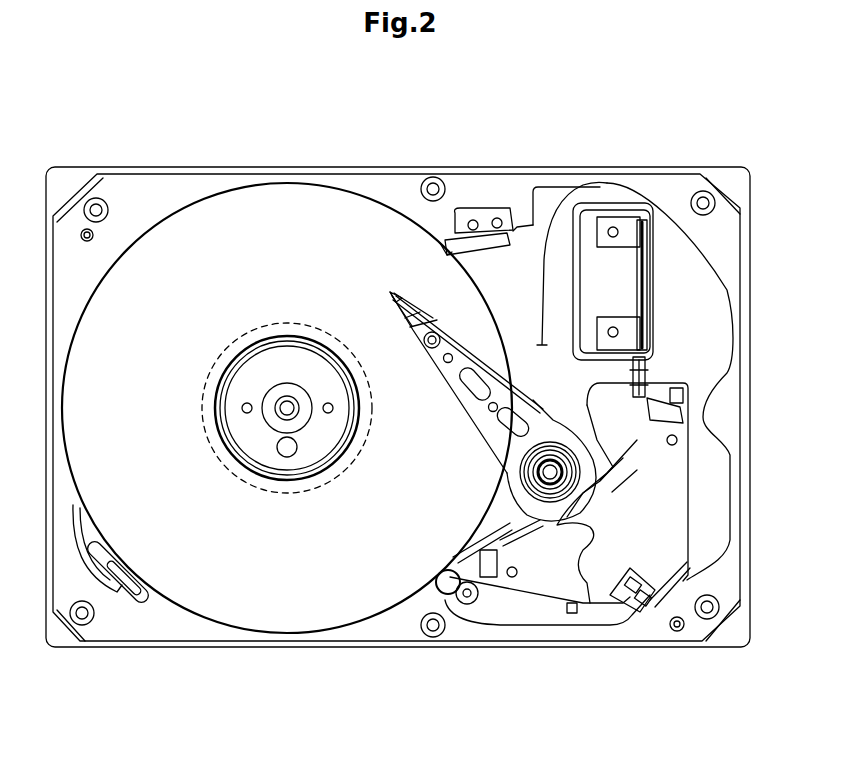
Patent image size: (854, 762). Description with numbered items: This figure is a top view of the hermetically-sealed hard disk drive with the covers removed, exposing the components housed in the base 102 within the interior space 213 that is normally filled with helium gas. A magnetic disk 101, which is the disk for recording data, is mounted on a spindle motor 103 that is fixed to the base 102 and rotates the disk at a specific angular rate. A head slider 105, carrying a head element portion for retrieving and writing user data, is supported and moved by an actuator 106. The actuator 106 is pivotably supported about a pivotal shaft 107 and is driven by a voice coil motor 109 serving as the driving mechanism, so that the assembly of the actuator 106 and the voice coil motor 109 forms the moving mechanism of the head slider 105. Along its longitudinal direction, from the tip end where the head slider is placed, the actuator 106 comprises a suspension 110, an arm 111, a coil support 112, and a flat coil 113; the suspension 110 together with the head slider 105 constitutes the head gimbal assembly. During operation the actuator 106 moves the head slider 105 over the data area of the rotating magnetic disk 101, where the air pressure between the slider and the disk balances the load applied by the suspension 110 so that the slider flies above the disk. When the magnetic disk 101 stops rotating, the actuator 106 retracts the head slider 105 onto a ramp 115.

The magnetic disk 101 is at (493, 307).
The base 102 is at (330, 648).
The spindle motor 103 is at (273, 490).
The head slider 105 is at (403, 297).
The actuator 106 is at (441, 391).
The pivotal shaft 107 is at (507, 472).
The voice coil motor 109 is at (500, 611).
The suspension 110 is at (412, 333).
The arm 111 is at (480, 427).
The coil support 112 is at (690, 530).
The flat coil 113 is at (590, 603).
The ramp 115 is at (440, 243).
The interior space 213 is at (585, 185).